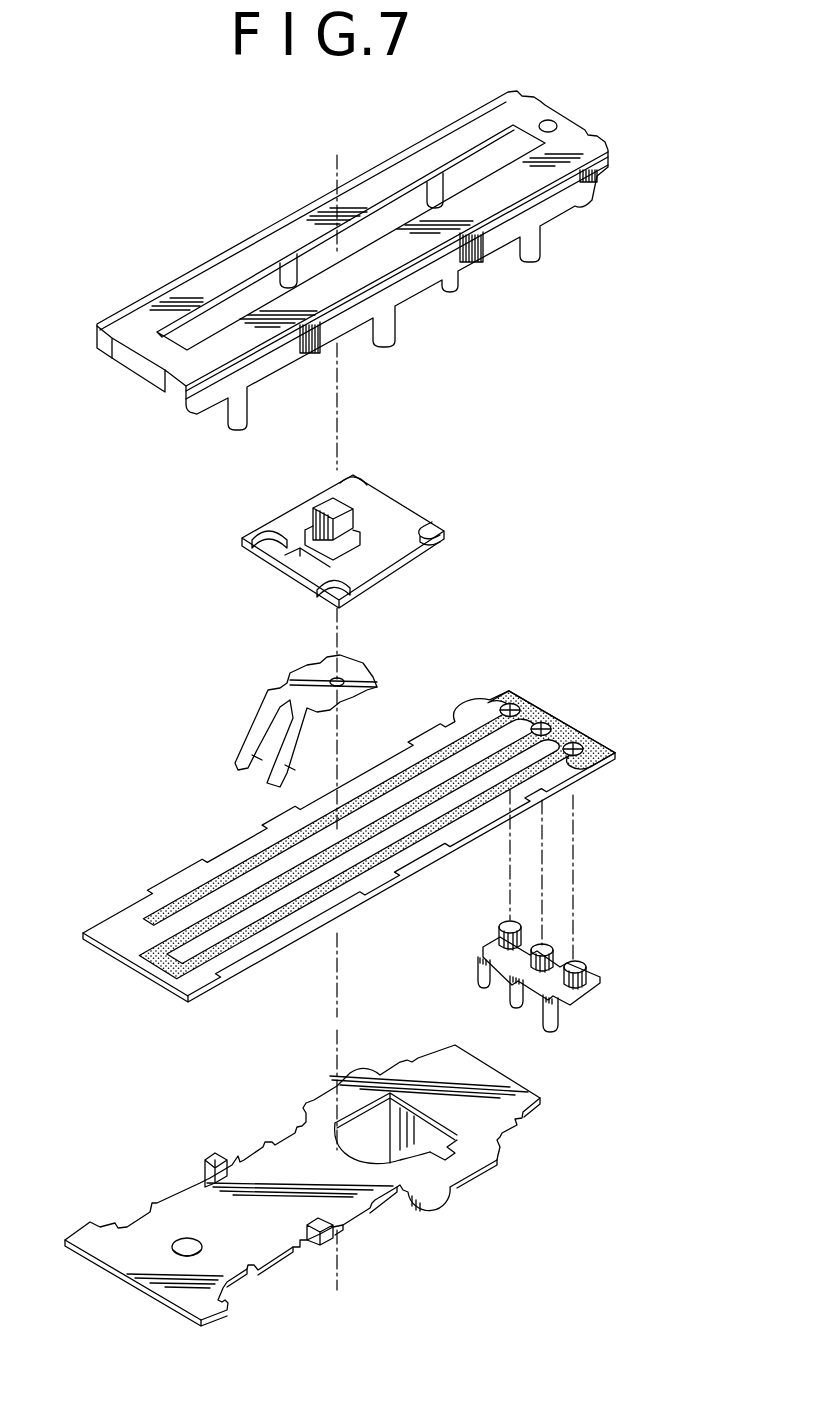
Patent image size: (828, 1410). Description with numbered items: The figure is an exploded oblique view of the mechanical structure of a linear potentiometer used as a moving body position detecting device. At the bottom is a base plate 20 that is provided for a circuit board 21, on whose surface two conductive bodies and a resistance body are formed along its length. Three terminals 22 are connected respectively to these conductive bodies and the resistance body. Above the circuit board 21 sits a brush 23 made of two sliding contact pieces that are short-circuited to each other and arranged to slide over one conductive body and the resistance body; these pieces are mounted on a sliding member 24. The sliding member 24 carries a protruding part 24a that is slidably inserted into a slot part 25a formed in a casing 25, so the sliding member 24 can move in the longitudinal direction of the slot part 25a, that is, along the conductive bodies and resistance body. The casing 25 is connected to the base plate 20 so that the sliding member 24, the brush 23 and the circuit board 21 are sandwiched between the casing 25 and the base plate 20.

The base plate 20 is at (497, 1152).
The circuit board 21 is at (600, 740).
The terminals 22 is at (600, 981).
The brush 23 is at (287, 683).
The sliding member 24 is at (353, 524).
The protruding part 24a is at (333, 497).
The casing 25 is at (352, 260).
The slot part 25a is at (250, 312).